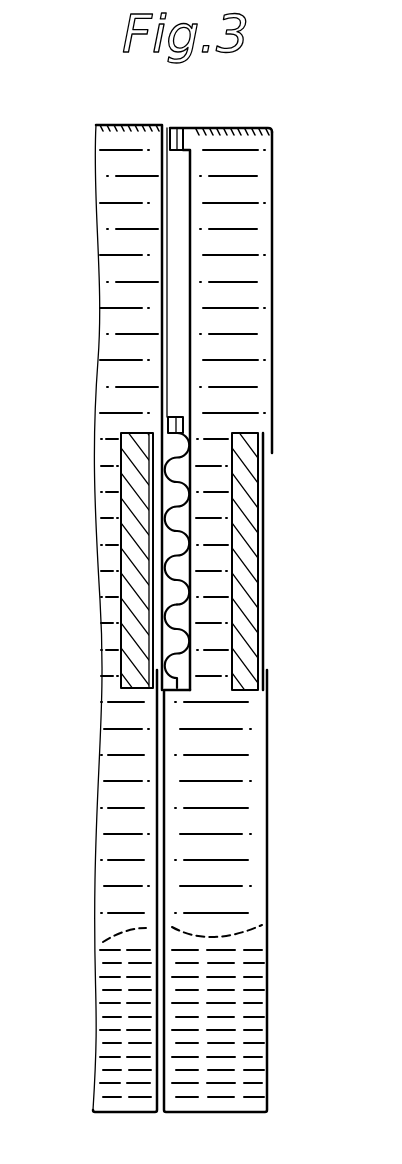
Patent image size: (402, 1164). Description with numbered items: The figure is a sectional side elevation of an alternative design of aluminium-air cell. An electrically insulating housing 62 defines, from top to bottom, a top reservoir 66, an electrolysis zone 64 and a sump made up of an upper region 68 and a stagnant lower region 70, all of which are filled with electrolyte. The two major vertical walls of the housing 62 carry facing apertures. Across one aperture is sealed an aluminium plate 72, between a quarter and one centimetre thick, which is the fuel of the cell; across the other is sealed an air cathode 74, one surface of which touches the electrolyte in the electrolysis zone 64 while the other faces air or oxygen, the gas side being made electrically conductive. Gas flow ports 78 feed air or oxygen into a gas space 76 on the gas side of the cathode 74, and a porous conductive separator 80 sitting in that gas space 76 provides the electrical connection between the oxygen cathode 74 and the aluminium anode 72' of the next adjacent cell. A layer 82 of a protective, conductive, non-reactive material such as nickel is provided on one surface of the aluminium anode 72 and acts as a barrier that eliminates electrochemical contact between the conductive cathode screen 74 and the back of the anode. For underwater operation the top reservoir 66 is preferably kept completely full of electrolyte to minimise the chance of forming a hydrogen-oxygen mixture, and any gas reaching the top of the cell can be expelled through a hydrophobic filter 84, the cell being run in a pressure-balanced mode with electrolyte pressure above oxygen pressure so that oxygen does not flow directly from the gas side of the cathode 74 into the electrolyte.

The electrically insulating housing 62 is at (268, 847).
The electrolysis zone 64 is at (207, 613).
The top reservoir 66 is at (238, 298).
The upper region of sump 68 is at (238, 878).
The stagnant lower region of sump 70 is at (247, 978).
The aluminium plate 72 is at (289, 553).
The aluminium anode of next adjacent cell 72' is at (94, 554).
The air cathode 74 is at (170, 501).
The gas space 76 is at (170, 561).
The gas flow ports 78 is at (163, 150).
The porous conductive separator 80 is at (170, 634).
The protective conductive non-reactive layer 82 is at (262, 500).
The hydrophobic filter 84 is at (252, 125).